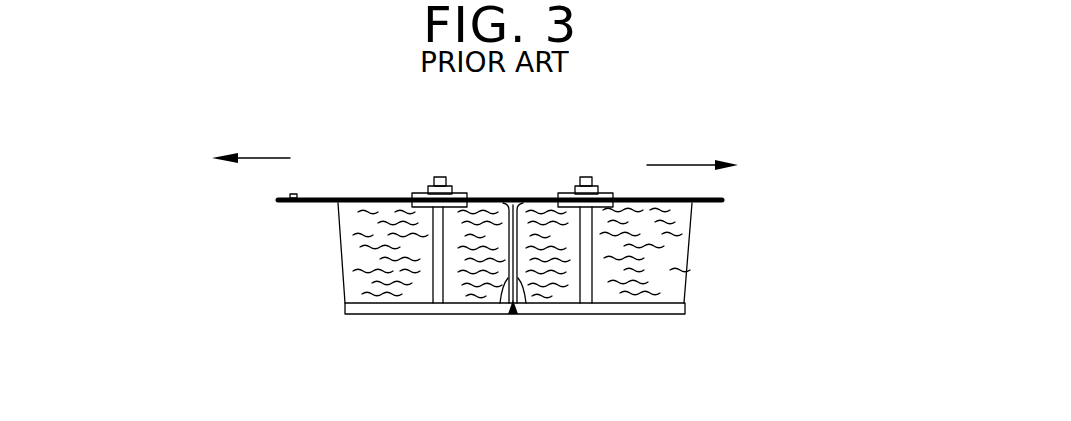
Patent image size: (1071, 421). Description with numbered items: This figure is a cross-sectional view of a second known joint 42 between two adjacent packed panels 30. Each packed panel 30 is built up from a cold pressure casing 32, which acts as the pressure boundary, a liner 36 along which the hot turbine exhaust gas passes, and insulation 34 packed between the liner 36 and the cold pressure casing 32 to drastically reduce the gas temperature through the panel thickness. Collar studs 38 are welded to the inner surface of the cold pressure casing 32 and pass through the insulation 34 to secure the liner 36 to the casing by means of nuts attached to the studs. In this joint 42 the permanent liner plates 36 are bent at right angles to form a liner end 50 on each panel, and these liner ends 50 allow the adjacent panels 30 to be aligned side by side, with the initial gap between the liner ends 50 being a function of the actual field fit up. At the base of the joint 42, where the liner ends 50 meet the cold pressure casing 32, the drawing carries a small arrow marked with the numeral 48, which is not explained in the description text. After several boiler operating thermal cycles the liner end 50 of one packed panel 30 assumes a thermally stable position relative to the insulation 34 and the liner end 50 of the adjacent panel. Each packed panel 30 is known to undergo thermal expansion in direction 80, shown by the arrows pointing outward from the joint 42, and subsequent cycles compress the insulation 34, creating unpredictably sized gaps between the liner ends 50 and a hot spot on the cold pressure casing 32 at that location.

The packed panel 30 is at (375, 180).
The cold pressure casing 32 is at (360, 308).
The insulation 34 is at (352, 268).
The liner 36 is at (313, 203).
The collar stud 38 is at (433, 275).
The joint 42 is at (513, 186).
The force arrow at divider base 48 is at (513, 316).
The liner end 50 is at (508, 275).
The direction of thermal expansion 80 is at (262, 158).